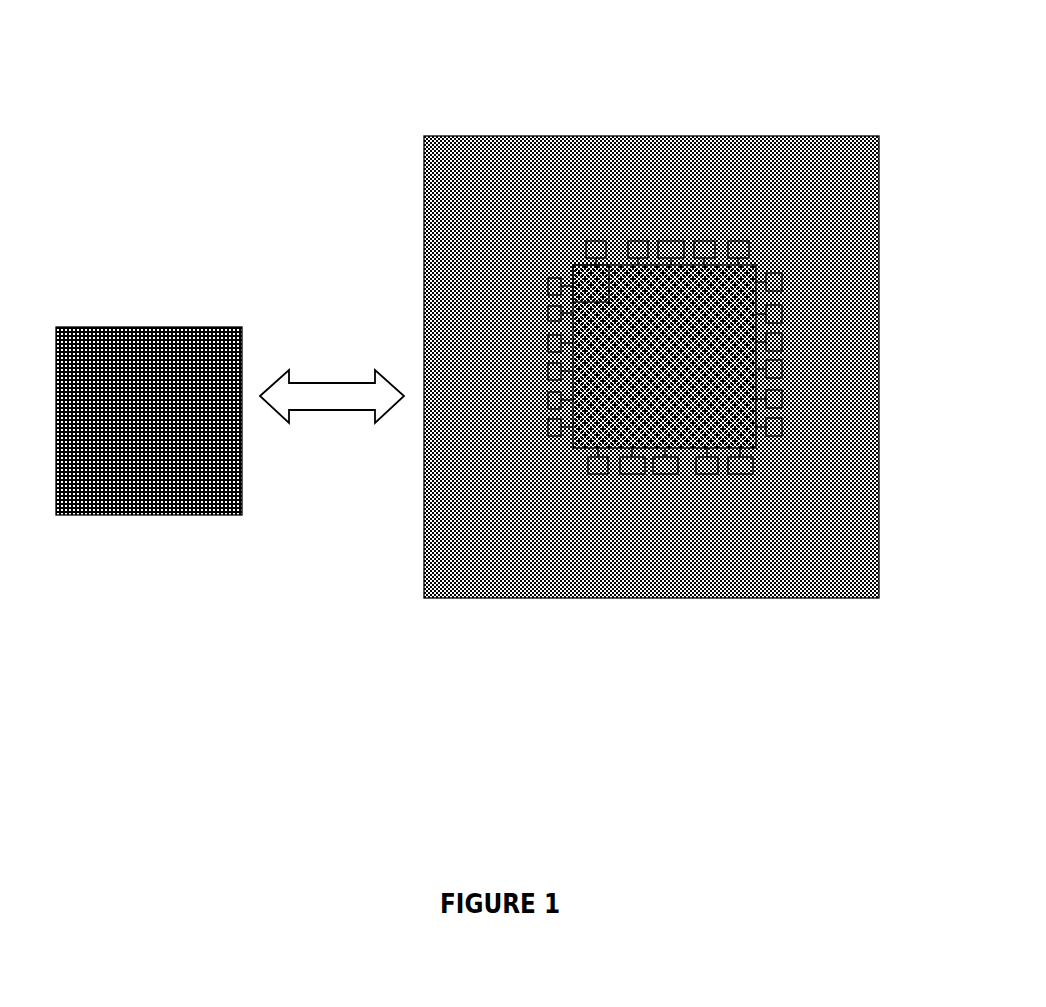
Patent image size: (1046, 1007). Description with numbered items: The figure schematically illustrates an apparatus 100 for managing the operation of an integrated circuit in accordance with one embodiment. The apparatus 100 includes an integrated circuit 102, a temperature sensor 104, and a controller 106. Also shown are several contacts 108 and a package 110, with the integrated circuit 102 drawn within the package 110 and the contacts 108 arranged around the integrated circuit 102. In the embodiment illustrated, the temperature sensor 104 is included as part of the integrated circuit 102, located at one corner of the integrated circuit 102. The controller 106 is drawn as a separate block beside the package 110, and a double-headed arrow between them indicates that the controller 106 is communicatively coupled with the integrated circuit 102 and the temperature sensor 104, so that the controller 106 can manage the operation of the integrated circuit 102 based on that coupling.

The apparatus 100 is at (215, 43).
The integrated circuit 102 is at (577, 430).
The temperature sensor 104 is at (569, 272).
The controller 106 is at (79, 319).
The contacts 108 is at (642, 460).
The package 110 is at (622, 165).